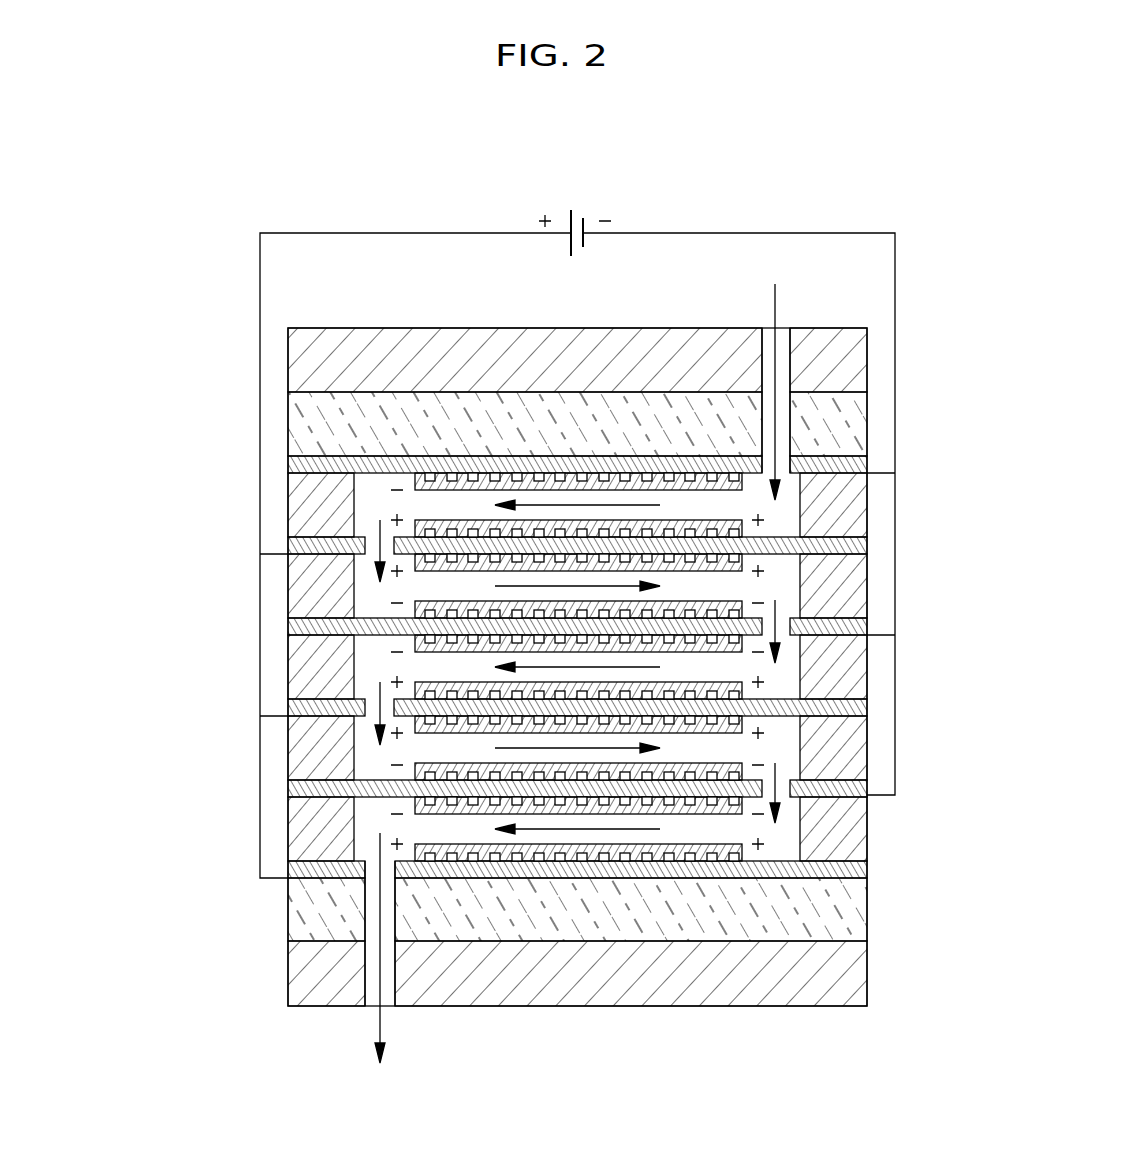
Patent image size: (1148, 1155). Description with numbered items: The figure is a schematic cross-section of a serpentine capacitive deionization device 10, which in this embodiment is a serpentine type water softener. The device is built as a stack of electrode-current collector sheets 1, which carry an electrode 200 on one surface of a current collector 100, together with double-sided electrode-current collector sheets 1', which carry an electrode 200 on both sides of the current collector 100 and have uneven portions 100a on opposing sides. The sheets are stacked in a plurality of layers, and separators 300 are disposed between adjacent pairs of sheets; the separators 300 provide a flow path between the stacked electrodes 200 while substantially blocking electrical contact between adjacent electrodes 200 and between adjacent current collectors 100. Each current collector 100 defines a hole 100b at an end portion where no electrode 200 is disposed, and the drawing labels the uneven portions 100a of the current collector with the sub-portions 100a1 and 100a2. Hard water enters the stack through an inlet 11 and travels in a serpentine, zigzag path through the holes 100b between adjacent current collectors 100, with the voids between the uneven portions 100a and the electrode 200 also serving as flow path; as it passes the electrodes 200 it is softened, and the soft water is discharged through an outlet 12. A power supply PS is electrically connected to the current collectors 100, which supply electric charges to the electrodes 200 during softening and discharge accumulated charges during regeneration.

The serpentine capacitive deionization device 10 is at (895, 212).
The power supply PS is at (575, 218).
The inlet 11 is at (780, 337).
The outlet 12 is at (373, 997).
The current collector 100 is at (865, 466).
The uneven portions 100a is at (178, 812).
The first part of electrode opening 100a1 is at (350, 833).
The second part of electrode opening 100a2 is at (365, 862).
The hole 100b is at (370, 537).
The electrode 200 is at (745, 490).
The separator 300 is at (862, 514).
The electrode-current collector sheet 1 is at (991, 671).
The double-sided electrode-current collector sheet 1' is at (989, 792).